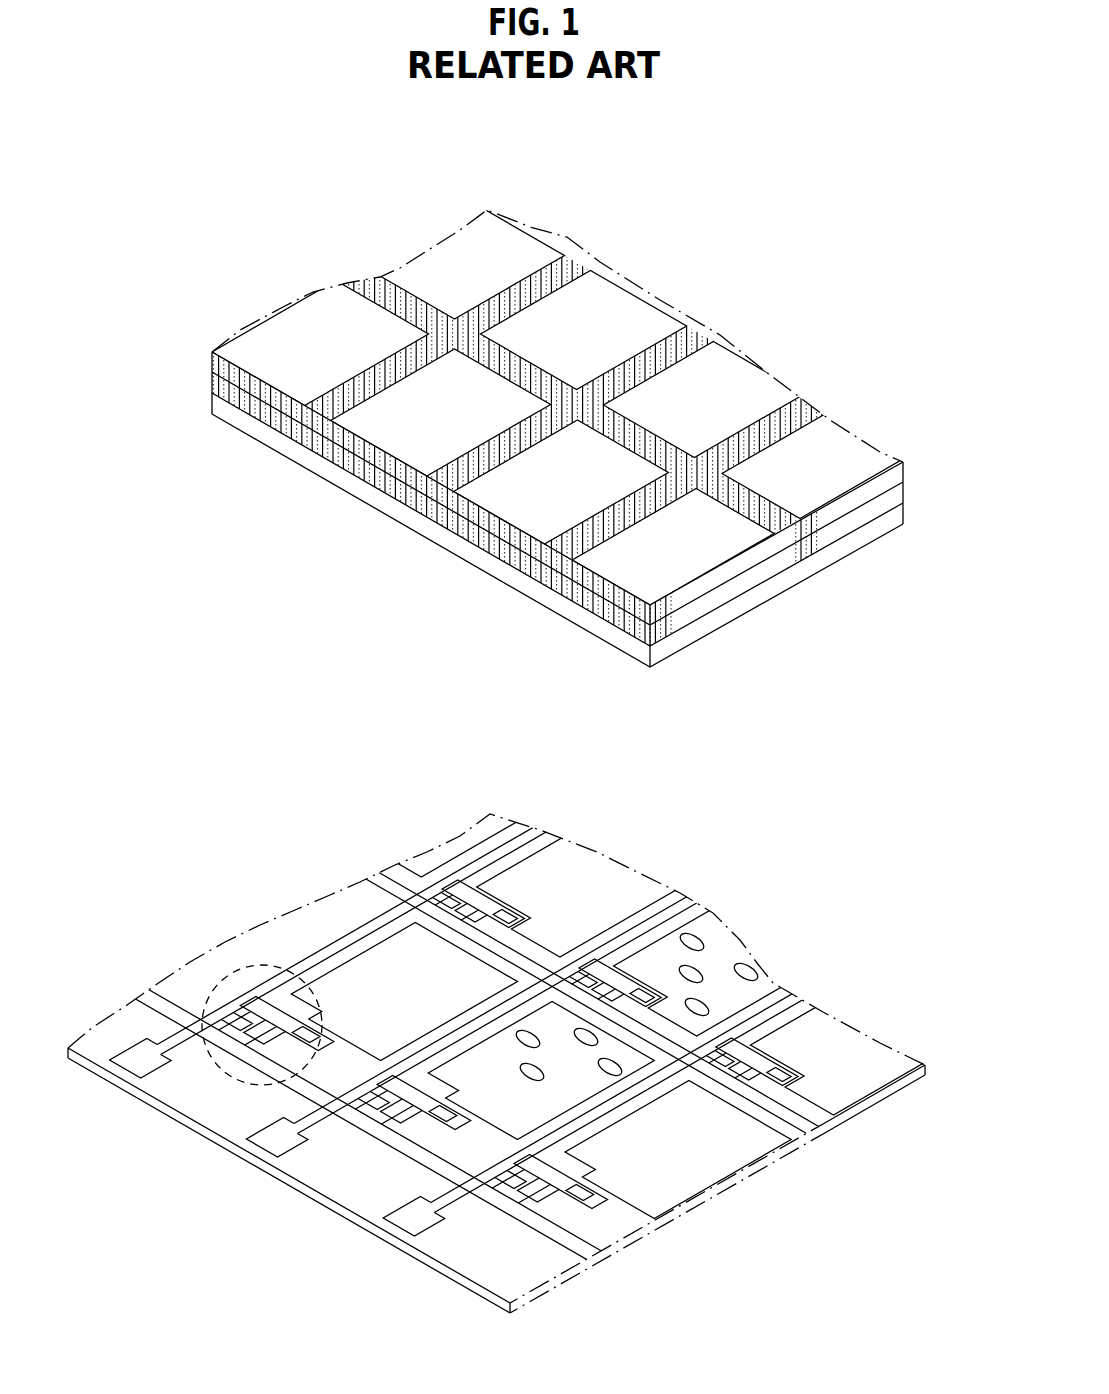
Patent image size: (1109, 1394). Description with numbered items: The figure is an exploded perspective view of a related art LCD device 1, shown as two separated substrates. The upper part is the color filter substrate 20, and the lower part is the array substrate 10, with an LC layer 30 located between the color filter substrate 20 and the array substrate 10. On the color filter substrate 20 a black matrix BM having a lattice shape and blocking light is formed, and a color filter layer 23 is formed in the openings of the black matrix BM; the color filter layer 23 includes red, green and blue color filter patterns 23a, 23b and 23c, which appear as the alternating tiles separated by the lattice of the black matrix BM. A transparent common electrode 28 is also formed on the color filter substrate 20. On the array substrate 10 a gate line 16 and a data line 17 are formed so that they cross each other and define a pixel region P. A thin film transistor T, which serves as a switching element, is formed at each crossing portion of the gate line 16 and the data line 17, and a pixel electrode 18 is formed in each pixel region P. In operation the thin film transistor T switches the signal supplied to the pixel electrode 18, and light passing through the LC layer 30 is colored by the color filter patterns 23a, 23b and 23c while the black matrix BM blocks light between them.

The LCD device 1 is at (583, 141).
The color filter substrate 20 is at (907, 469).
The color filter layer 23 is at (757, 237).
The red color filter pattern 23a is at (623, 305).
The green color filter pattern 23b is at (740, 380).
The blue color filter pattern 23c is at (865, 473).
The transparent common electrode 28 is at (583, 622).
The black matrix BM is at (672, 612).
The LC layer 30 is at (780, 988).
The array substrate 10 is at (392, 1238).
The gate line 16 is at (422, 1153).
The data line 17 is at (335, 1122).
The pixel electrode 18 is at (590, 1130).
The pixel region P is at (700, 1160).
The thin film transistor T is at (208, 1068).